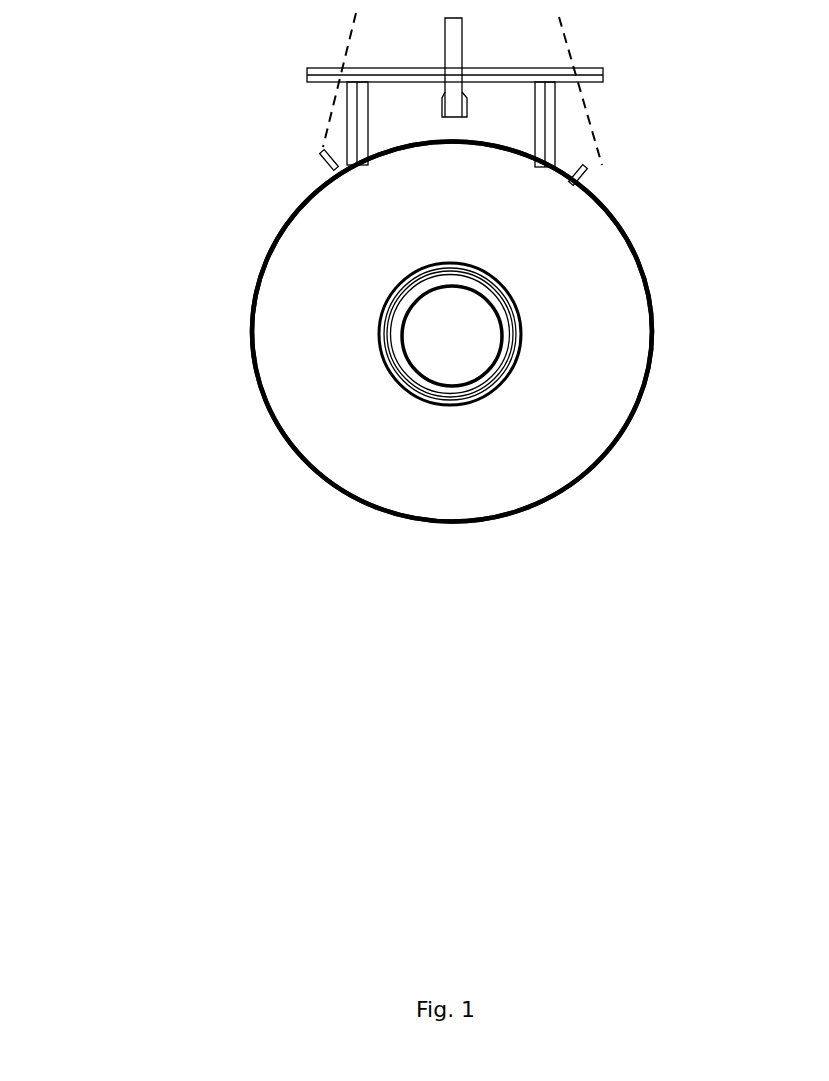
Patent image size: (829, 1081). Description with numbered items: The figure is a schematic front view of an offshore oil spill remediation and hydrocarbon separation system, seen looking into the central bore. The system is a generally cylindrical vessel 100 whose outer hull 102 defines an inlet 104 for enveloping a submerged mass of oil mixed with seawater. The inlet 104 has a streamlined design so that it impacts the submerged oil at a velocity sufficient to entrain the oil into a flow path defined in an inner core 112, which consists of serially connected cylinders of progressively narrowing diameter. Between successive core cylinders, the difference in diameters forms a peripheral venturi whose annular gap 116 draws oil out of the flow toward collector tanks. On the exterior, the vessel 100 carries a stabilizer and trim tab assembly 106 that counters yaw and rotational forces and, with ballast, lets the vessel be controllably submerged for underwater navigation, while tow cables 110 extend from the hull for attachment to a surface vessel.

The vessel 100 is at (256, 258).
The outer hull 102 is at (593, 472).
The inlet 104 is at (393, 483).
The stabilizer and trim tab assembly 106 is at (295, 90).
The tow cables 110 is at (598, 91).
The inner core 112 is at (528, 286).
The annular gap 116 is at (526, 349).